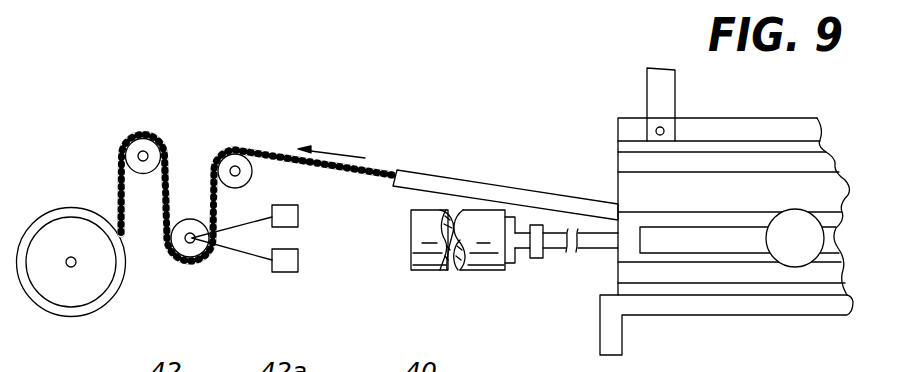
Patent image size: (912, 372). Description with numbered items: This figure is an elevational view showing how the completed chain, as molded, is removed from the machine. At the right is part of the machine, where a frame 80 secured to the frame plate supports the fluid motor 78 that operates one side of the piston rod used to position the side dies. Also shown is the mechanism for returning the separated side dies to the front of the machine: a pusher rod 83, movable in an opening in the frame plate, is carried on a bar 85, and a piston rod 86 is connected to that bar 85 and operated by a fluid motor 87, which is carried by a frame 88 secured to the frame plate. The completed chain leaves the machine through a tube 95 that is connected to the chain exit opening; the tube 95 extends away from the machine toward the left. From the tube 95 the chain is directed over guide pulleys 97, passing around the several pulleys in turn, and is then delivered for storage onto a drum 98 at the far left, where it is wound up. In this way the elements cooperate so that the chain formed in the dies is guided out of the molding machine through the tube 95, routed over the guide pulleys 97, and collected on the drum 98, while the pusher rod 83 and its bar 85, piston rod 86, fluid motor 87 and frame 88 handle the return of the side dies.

The fluid motor 78 is at (825, 243).
The frame 80 is at (692, 230).
The pusher rod 83 is at (593, 247).
The bar 85 is at (537, 225).
The piston rod 86 is at (527, 248).
The fluid motor 87 is at (483, 250).
The frame 88 is at (513, 267).
The tube 95 is at (481, 184).
The guide pulleys 97 is at (228, 162).
The drum 98 is at (100, 292).